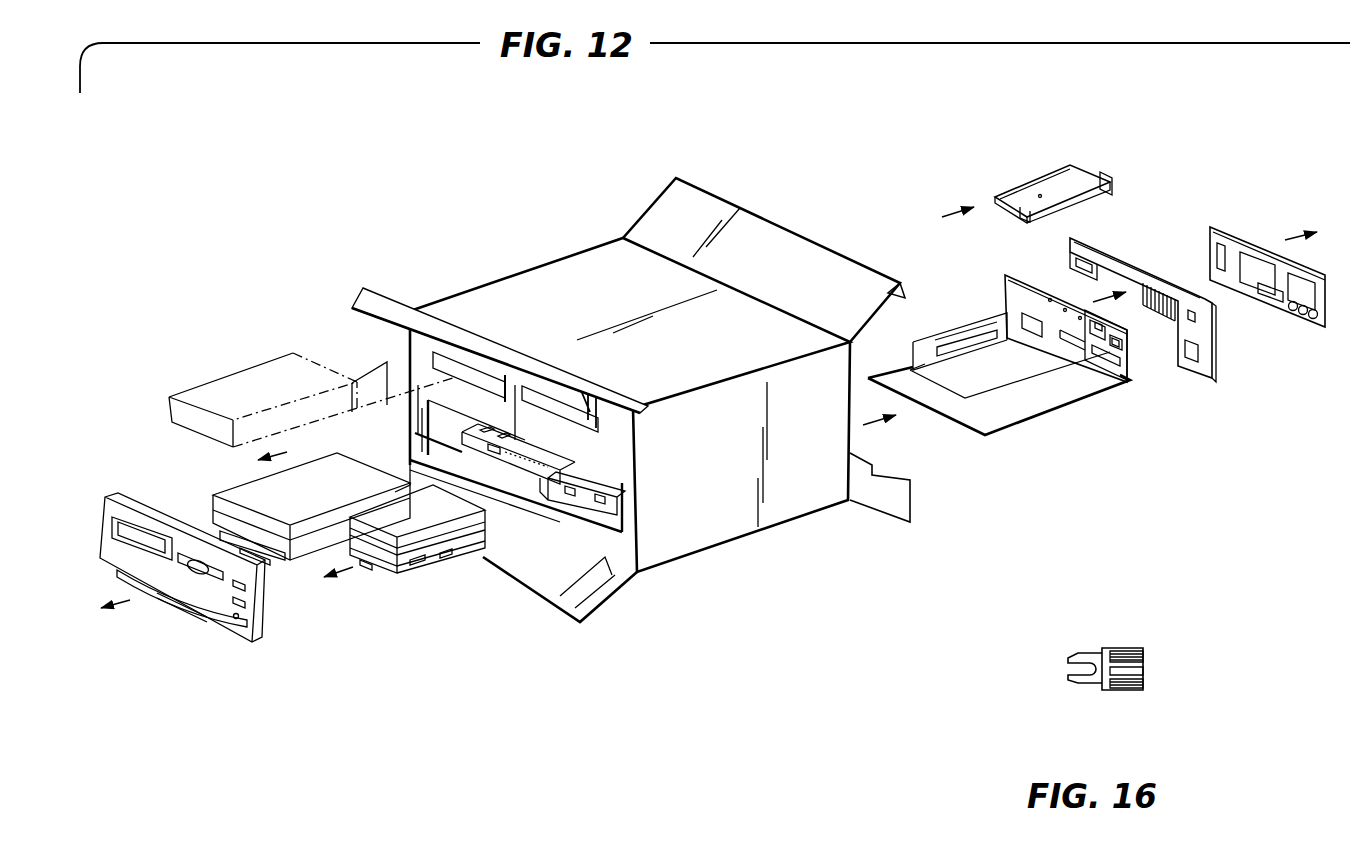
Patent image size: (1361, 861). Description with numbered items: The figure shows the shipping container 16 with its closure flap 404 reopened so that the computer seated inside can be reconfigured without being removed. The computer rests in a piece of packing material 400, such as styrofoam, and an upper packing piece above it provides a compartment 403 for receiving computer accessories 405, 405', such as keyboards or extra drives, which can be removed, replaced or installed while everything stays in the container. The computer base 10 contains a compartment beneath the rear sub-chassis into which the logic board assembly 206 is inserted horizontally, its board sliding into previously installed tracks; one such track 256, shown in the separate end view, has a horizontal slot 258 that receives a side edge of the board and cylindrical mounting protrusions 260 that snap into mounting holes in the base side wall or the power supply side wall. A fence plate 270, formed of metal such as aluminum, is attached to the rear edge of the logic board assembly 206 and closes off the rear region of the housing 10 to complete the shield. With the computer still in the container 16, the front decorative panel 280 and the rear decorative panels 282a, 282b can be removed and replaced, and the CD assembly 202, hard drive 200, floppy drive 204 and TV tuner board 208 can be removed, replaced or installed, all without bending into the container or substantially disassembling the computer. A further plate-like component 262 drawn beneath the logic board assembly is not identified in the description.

In FIG. 12, the base 10 is at (557, 503).
In FIG. 12, the shipping container 16 is at (406, 352).
In FIG. 12, the hard drive 200 is at (473, 562).
In FIG. 12, the CD assembly 202 is at (215, 492).
In FIG. 12, the floppy drive 204 is at (403, 487).
In FIG. 12, the logic board assembly 206 is at (1092, 401).
In FIG. 12, the TV tuner board 208 is at (1087, 162).
In FIG. 16, the track 256 is at (1116, 690).
In FIG. 16, the horizontal slot 258 is at (1144, 668).
In FIG. 16, the cylindrical mounting protrusions 260 is at (1073, 654).
In FIG. 12, the base plate 262 is at (1003, 416).
In FIG. 12, the fence plate 270 is at (1135, 356).
In FIG. 12, the front decorative panel 280 is at (266, 603).
In FIG. 12, the rear decorative panel 282a is at (1147, 262).
In FIG. 12, the rear decorative panel 282b is at (1239, 231).
In FIG. 12, the packing material 400 is at (632, 572).
In FIG. 12, the compartment 403 is at (457, 362).
In FIG. 12, the closure flap 404 is at (392, 294).
In FIG. 12, the computer accessory 405 is at (298, 390).
In FIG. 12, the computer accessory 405' is at (598, 469).